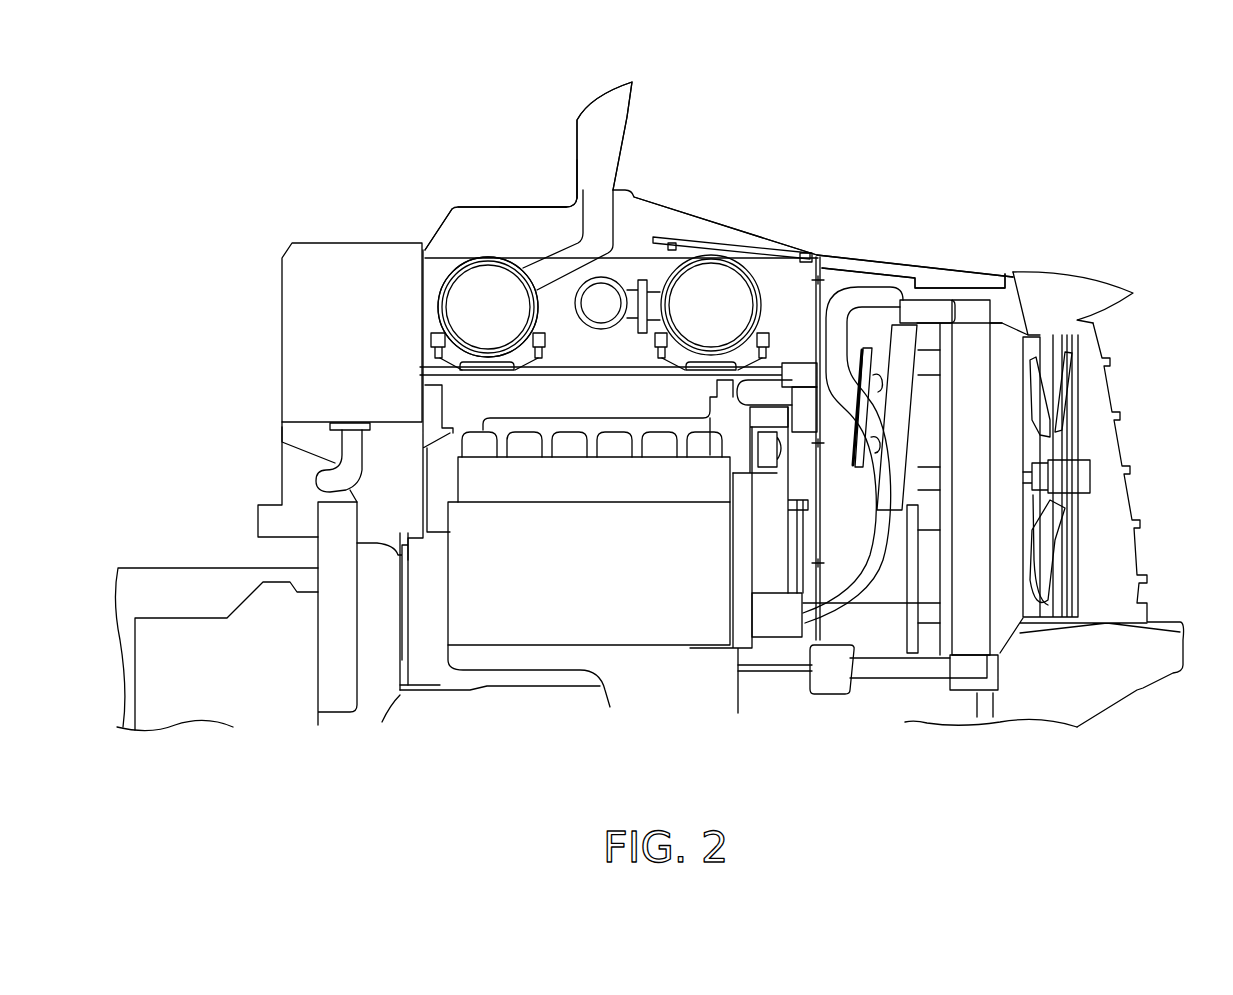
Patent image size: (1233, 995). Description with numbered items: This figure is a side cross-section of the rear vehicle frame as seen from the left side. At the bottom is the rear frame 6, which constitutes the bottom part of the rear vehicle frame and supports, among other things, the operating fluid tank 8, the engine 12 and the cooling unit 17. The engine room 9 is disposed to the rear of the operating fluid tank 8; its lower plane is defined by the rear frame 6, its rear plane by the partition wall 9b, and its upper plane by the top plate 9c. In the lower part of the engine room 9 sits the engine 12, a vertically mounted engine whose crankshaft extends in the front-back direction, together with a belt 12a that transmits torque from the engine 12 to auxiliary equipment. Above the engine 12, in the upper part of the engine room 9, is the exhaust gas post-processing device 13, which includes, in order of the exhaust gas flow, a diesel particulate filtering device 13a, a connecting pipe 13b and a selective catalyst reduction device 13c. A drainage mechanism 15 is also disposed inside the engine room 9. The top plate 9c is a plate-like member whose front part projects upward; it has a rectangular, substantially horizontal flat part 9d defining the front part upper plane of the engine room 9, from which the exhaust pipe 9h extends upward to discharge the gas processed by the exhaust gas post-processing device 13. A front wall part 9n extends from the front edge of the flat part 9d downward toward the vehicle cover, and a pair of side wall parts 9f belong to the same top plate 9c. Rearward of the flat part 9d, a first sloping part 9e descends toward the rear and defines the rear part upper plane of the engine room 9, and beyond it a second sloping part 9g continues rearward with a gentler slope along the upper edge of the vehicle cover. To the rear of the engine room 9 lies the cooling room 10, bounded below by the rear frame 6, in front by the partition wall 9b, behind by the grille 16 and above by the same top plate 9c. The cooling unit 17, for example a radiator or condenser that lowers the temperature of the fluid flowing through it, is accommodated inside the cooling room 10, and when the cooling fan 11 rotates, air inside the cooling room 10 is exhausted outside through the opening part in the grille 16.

The rear frame 6 is at (397, 697).
The operating fluid tank 8 is at (334, 243).
The engine room 9 is at (645, 252).
The partition wall 9b is at (852, 277).
The top plate 9c is at (527, 203).
The flat part 9d is at (550, 210).
The first sloping part 9e is at (693, 221).
The side wall parts 9f is at (500, 225).
The second sloping part 9g is at (879, 253).
The exhaust pipe 9h is at (610, 82).
The front wall part 9n is at (436, 233).
The cooling room 10 is at (897, 283).
The cooling fan 11 is at (1078, 398).
The engine 12 is at (516, 623).
The belt 12a is at (797, 572).
The exhaust gas post-processing device 13 is at (479, 253).
The diesel particulate filtering device 13a is at (787, 295).
The connecting pipe 13b is at (578, 307).
The selective catalyst reduction device 13c is at (440, 312).
The drainage mechanism 15 is at (740, 243).
The grille 16 is at (1123, 443).
The cooling unit 17 is at (984, 295).